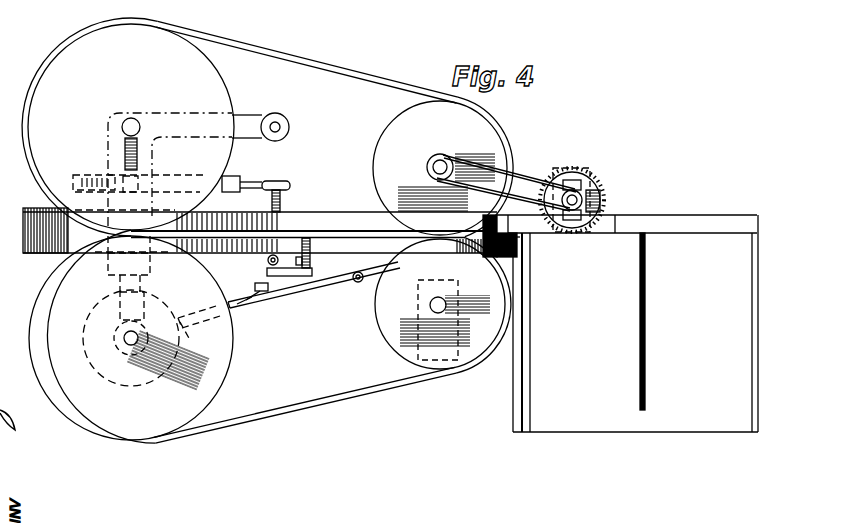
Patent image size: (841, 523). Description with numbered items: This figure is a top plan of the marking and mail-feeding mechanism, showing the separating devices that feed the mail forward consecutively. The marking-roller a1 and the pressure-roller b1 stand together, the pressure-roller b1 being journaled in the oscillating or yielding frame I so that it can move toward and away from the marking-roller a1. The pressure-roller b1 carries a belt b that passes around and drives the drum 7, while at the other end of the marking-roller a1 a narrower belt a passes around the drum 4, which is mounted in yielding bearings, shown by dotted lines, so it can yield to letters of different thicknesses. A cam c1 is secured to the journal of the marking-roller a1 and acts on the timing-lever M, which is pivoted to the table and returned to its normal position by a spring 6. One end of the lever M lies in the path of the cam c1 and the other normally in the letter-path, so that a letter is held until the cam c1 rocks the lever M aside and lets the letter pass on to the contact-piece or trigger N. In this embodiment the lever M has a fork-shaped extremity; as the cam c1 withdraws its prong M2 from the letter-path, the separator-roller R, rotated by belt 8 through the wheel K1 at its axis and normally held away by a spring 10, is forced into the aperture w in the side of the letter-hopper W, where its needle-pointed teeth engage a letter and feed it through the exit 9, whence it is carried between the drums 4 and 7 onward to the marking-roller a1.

The belt b is at (281, 57).
The pressure-roller b1 is at (147, 169).
The oscillating frame I is at (256, 136).
The drum 7 is at (440, 168).
The contact-piece or trigger N is at (330, 231).
The belt 8 is at (523, 179).
The gear wheel K1 is at (572, 185).
The separator-roller R is at (608, 193).
The spring 10 is at (605, 215).
The exit 9 is at (520, 237).
The arm or prong of timing-lever M2 is at (530, 250).
The aperture w is at (611, 228).
The letter-hopper W is at (627, 323).
The timing-lever M is at (314, 286).
The belt a is at (278, 336).
The marking-roller a1 is at (131, 338).
The cam c1 is at (199, 324).
The spring 6 is at (244, 296).
The drum 4 is at (440, 304).